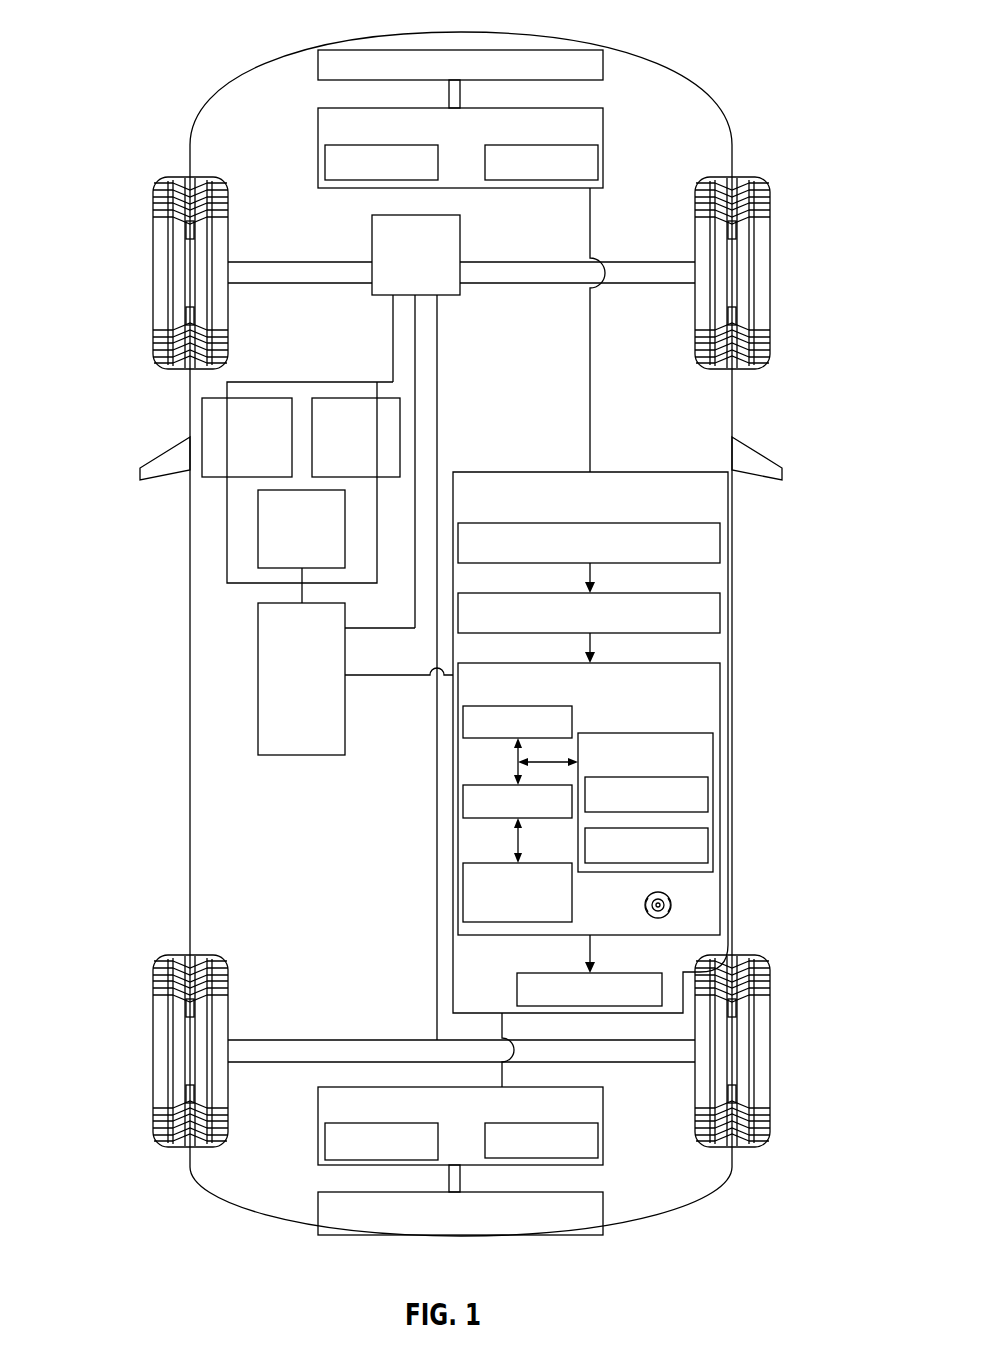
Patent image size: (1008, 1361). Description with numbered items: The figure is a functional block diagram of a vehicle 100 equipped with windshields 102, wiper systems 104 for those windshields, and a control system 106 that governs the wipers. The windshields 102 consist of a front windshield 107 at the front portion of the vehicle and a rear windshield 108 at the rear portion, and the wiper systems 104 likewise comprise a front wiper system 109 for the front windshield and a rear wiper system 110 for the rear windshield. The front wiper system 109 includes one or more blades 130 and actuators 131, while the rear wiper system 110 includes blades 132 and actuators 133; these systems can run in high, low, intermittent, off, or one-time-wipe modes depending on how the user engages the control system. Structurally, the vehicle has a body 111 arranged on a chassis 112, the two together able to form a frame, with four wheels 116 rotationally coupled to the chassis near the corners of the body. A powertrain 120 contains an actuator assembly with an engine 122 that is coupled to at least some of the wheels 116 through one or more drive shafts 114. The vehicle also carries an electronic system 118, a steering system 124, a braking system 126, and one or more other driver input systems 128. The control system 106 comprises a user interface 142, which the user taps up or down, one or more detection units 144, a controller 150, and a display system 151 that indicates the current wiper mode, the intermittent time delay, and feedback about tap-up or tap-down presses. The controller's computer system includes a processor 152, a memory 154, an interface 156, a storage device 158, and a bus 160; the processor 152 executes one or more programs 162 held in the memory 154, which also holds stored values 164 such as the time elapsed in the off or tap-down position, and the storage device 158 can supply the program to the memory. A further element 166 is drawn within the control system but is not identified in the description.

The vehicle 100 is at (458, 618).
The windshields 102 is at (462, 635).
The wiper systems 104 is at (534, 616).
The control system 106 is at (580, 725).
The front windshield 107 is at (570, 50).
The rear windshield 108 is at (355, 1233).
The front wiper system 109 is at (534, 119).
The rear wiper system 110 is at (466, 1124).
The body 111 is at (196, 868).
The chassis 112 is at (428, 986).
The drive shafts 114 is at (302, 283).
The wheels 116 is at (153, 272).
The electronic system 118 is at (258, 685).
The powertrain 120 is at (330, 622).
The engine 122 is at (460, 240).
The steering system 124 is at (202, 420).
The braking system 126 is at (355, 398).
The driver input systems 128 is at (258, 528).
The blades 130 is at (325, 160).
The actuators 131 is at (598, 160).
The blades 132 is at (325, 1140).
The actuators 133 is at (598, 1148).
The user interface 142 is at (722, 543).
The detection units 144 is at (722, 613).
The controller 150 is at (598, 798).
The display system 151 is at (530, 973).
The processor 152 is at (463, 720).
The memory 154 is at (695, 791).
The interface 156 is at (463, 800).
The storage device 158 is at (463, 888).
The bus 160 is at (516, 762).
The programs 162 is at (708, 795).
The stored values 164 is at (708, 845).
The speaker 166 is at (672, 905).